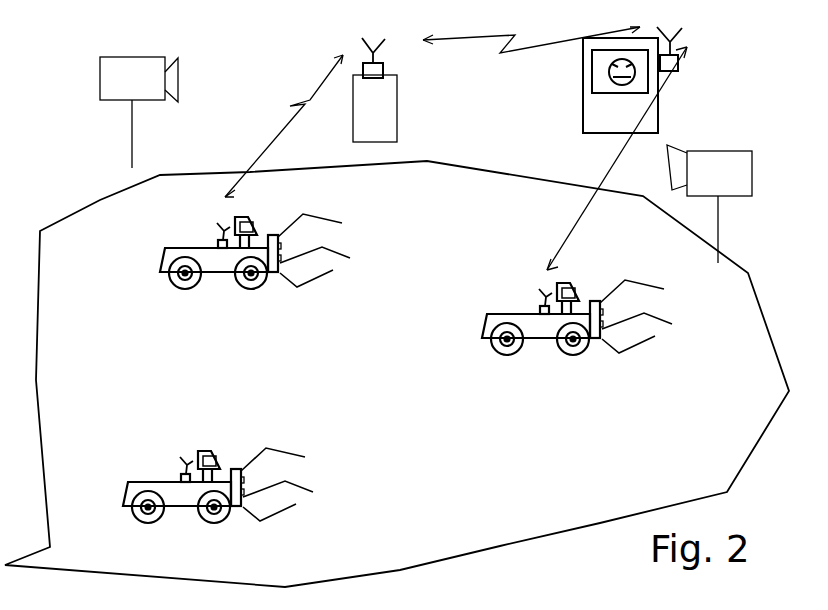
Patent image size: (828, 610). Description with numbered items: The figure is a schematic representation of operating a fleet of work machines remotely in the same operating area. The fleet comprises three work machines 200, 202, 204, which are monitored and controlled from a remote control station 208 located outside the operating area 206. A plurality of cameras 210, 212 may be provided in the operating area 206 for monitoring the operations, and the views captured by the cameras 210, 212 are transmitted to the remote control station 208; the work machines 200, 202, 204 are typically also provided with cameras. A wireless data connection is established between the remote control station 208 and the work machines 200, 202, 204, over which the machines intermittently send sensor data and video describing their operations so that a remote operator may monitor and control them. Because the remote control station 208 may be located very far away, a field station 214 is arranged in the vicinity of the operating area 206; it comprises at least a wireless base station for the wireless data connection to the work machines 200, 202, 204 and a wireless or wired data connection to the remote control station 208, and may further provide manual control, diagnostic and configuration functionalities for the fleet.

The work machine 200 is at (195, 250).
The work machine 202 is at (526, 307).
The work machine 204 is at (153, 480).
The operating area 206 is at (576, 462).
The remote control station 208 is at (633, 121).
The camera 210 is at (139, 112).
The camera 212 is at (709, 204).
The field station 214 is at (375, 90).